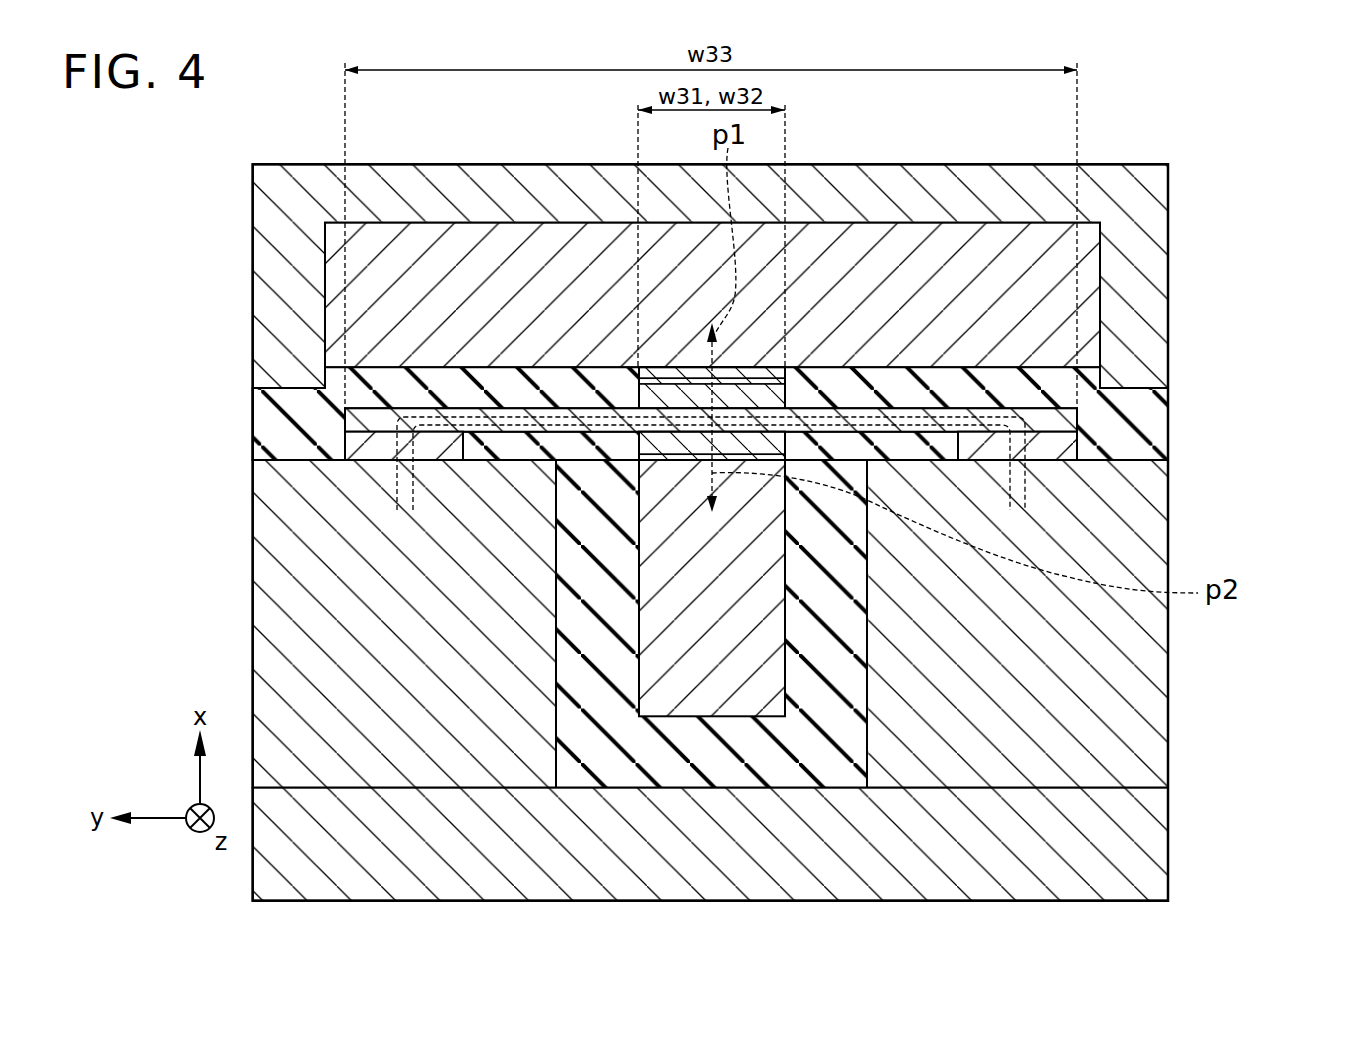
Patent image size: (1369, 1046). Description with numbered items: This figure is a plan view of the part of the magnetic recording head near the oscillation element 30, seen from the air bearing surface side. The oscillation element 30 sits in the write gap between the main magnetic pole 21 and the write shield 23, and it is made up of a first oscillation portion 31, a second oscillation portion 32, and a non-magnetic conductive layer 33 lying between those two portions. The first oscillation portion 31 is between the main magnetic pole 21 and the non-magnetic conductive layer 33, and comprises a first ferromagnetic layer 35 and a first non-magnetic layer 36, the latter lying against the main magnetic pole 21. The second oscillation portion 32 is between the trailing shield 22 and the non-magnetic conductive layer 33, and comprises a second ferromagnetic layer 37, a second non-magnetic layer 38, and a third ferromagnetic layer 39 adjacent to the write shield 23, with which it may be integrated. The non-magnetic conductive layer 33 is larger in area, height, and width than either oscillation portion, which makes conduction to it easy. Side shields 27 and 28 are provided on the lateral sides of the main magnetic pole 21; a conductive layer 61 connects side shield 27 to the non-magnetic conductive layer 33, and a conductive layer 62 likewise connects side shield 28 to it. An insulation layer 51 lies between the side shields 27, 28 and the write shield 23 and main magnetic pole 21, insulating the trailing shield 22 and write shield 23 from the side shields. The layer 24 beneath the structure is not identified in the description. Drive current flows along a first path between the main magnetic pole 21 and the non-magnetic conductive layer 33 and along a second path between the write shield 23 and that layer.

The main magnetic pole 21 is at (706, 698).
The trailing shield 22 is at (1158, 184).
The write shield 23 is at (944, 240).
The substrate 24 is at (818, 880).
The side shield 27 is at (262, 605).
The side shield 28 is at (1160, 671).
The oscillation element 30 is at (845, 384).
The first oscillation portion 31 is at (962, 489).
The second oscillation portion 32 is at (962, 315).
The non-magnetic conductive layer 33 is at (1063, 415).
The first ferromagnetic layer 35 is at (770, 442).
The first non-magnetic layer 36 is at (780, 460).
The second ferromagnetic layer 37 is at (780, 398).
The second non-magnetic layer 38 is at (775, 381).
The third ferromagnetic layer 39 is at (775, 373).
The insulation layer 51 is at (262, 437).
The conductive layer 61 is at (380, 443).
The conductive layer 62 is at (1063, 445).